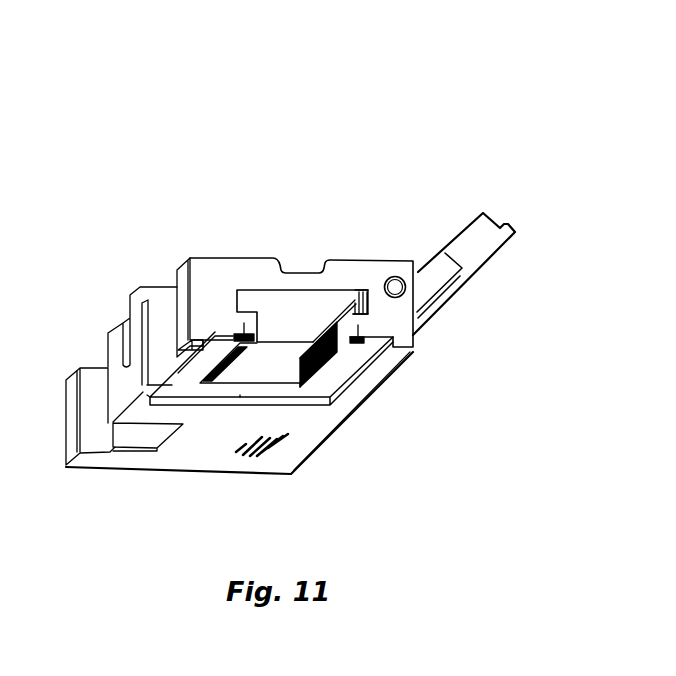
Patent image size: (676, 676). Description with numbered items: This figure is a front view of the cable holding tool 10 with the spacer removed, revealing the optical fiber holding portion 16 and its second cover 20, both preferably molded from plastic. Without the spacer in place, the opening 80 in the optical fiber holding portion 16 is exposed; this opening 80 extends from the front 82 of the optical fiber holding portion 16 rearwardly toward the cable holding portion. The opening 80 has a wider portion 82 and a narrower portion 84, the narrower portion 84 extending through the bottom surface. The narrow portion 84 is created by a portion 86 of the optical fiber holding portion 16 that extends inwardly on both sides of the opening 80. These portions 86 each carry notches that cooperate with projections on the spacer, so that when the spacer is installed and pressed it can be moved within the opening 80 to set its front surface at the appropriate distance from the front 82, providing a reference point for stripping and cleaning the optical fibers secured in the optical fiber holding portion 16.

The cable holding tool 10 is at (400, 97).
The optical fiber holding portion 16 is at (210, 257).
The second cover 20 is at (514, 228).
The opening 80 is at (288, 307).
The front 82 is at (248, 300).
The narrower portion 84 is at (343, 340).
The portion 86 is at (357, 335).